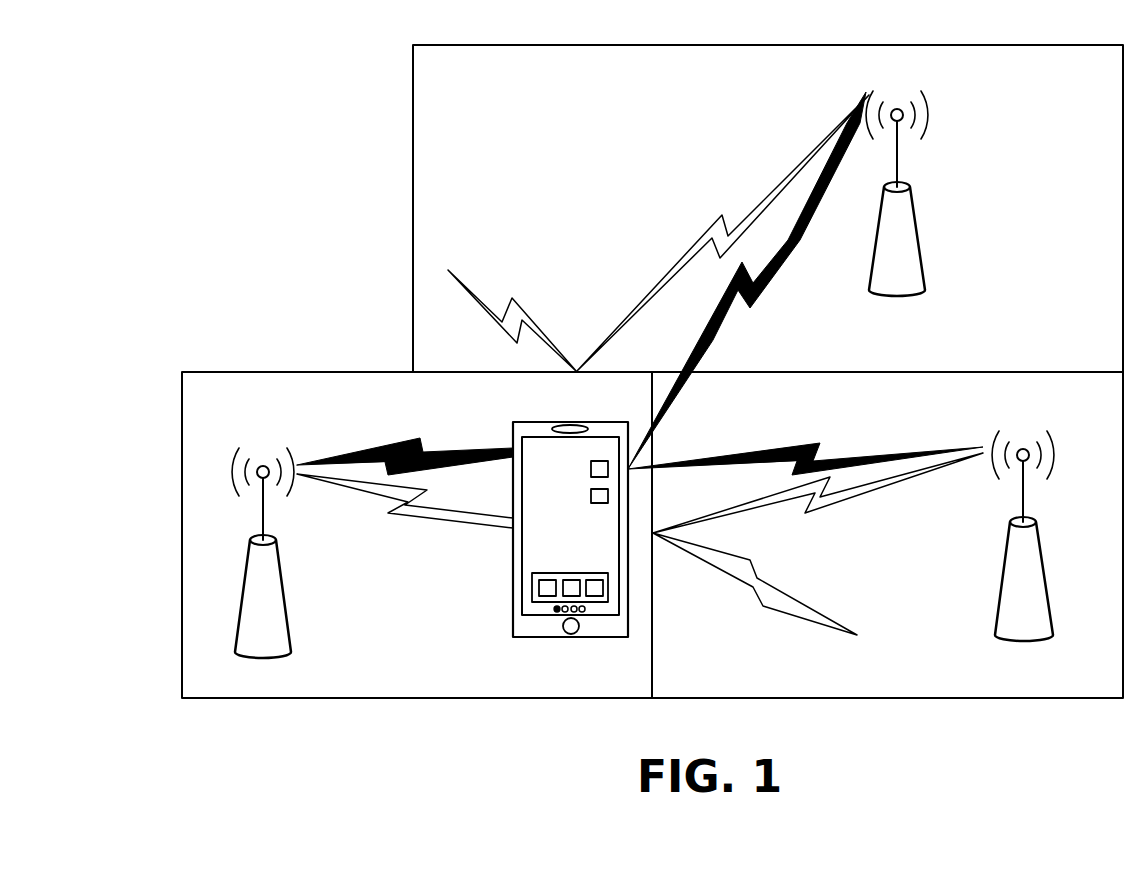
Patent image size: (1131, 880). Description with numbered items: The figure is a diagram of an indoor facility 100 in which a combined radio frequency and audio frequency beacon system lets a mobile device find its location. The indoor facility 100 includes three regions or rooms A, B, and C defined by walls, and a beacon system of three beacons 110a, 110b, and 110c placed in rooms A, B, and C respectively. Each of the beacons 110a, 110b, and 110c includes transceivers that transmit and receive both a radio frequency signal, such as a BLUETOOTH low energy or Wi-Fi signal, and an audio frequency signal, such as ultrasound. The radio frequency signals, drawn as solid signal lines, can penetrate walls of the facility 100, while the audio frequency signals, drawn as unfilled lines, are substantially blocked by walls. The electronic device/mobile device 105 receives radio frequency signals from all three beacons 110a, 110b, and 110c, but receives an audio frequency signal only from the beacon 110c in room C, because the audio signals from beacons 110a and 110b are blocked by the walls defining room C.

The indoor facility 100 is at (290, 156).
The electronic device/mobile device 105 is at (557, 517).
The beacon 110a is at (943, 193).
The beacon 110b is at (978, 536).
The beacon 110c is at (308, 553).